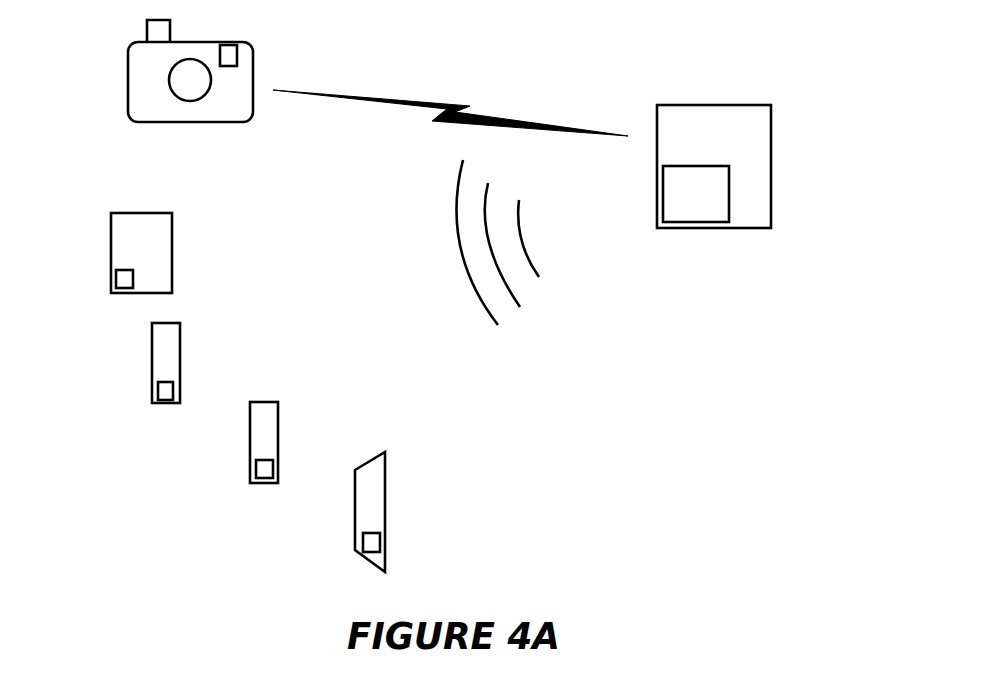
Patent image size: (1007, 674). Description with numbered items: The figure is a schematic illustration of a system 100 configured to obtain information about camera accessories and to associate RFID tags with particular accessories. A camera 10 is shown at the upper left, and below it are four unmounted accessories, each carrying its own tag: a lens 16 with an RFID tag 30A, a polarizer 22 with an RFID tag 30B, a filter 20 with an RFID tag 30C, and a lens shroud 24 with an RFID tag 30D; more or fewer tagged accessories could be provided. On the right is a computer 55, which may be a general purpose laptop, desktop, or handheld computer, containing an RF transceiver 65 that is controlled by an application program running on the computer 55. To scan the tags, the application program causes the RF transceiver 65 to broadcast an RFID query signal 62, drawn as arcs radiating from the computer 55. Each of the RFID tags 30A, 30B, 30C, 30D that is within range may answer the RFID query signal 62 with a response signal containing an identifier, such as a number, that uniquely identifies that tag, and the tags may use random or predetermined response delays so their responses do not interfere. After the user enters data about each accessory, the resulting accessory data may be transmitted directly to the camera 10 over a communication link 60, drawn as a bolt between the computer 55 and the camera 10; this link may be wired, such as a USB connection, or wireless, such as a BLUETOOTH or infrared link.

The camera 10 is at (128, 70).
The system 100 is at (617, 76).
The communication link 60 is at (453, 108).
The computer 55 is at (771, 160).
The RF transceiver 65 is at (712, 206).
The RFID query signal 62 is at (533, 265).
The lens 16 is at (172, 252).
The RFID tag 30A is at (116, 276).
The polarizer 22 is at (180, 340).
The RFID tag 30B is at (158, 390).
The filter 20 is at (262, 402).
The RFID tag 30C is at (256, 468).
The lens shroud 24 is at (385, 510).
The RFID tag 30D is at (365, 540).